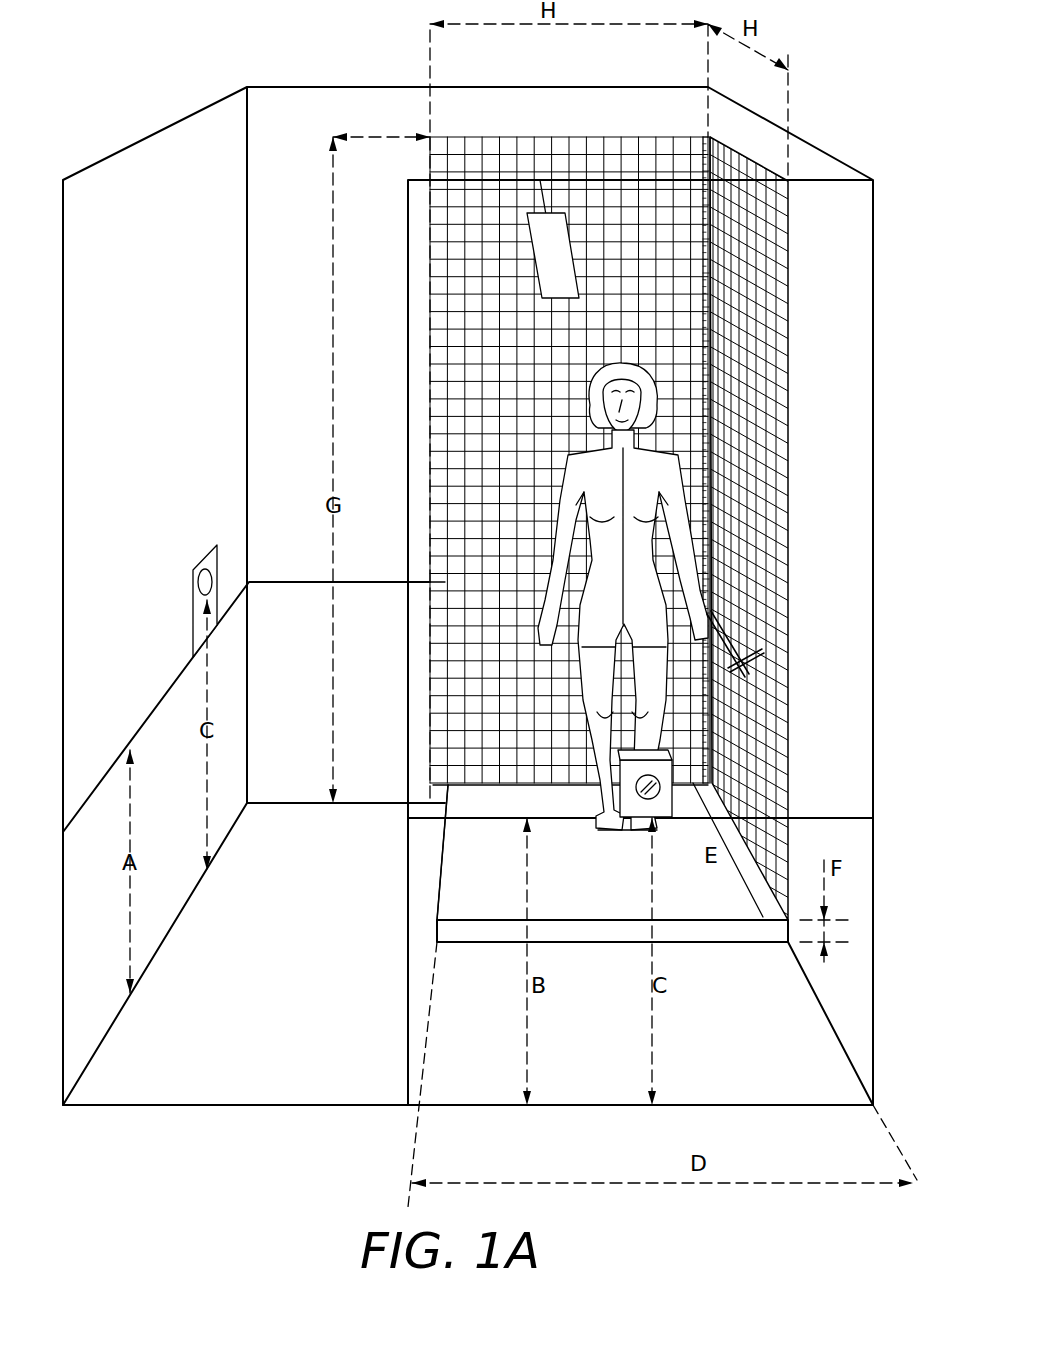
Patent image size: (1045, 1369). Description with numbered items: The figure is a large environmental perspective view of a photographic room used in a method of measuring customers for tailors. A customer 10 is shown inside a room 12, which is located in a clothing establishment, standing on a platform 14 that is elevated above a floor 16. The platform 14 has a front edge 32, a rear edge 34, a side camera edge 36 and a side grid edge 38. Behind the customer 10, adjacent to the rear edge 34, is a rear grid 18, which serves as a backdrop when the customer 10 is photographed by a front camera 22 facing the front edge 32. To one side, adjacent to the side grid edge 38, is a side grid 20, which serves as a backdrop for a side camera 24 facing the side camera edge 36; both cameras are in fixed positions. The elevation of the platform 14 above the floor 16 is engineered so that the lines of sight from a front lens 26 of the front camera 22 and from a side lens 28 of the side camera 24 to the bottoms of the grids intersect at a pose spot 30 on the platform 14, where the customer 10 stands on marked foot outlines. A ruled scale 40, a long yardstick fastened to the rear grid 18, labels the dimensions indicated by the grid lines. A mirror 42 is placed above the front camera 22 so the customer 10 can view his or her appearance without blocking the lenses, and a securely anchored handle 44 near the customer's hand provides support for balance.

The customer 10 is at (488, 625).
The room 12 is at (173, 1125).
The platform 14 is at (570, 864).
The floor 16 is at (297, 999).
The rear grid 18 is at (472, 395).
The side grid 20 is at (762, 422).
The front camera 22 is at (672, 830).
The side camera 24 is at (193, 638).
The front lens 26 is at (640, 794).
The side lens 28 is at (203, 584).
The pose spot 30 is at (628, 832).
The front edge 32 is at (587, 942).
The rear edge 34 is at (488, 787).
The side camera edge 36 is at (440, 873).
The side grid edge 38 is at (762, 905).
The ruled scale 40 is at (708, 135).
The mirror 42 is at (558, 282).
The handle 44 is at (728, 646).